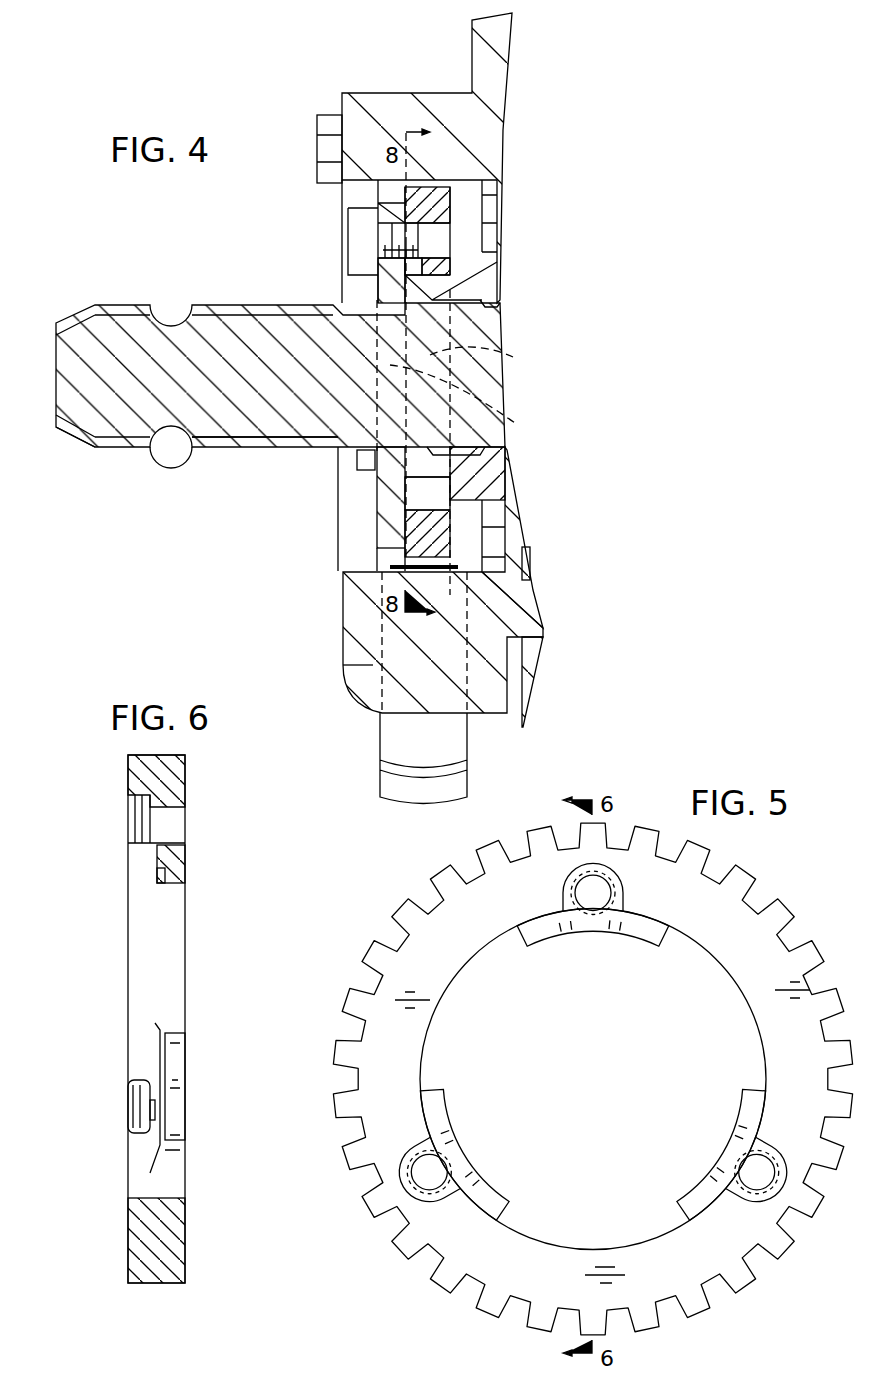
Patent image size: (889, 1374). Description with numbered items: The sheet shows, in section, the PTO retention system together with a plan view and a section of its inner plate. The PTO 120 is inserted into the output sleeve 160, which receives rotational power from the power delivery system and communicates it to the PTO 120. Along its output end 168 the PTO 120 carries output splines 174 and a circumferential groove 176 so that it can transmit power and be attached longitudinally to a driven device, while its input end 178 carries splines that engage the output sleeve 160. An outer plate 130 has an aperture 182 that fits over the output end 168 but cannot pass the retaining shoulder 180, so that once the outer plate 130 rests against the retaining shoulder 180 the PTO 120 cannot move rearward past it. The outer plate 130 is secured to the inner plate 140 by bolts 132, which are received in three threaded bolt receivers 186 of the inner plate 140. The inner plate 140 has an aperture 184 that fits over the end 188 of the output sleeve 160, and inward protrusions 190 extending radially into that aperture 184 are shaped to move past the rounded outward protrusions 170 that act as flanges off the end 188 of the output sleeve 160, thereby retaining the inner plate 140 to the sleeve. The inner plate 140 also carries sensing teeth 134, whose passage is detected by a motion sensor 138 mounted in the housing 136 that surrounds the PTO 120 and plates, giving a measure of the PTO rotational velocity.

In FIG. 4, the PTO 120 is at (66, 360).
In FIG. 4, the outer plate 130 is at (378, 520).
In FIG. 4, the bolts 132 is at (350, 216).
In FIG. 5, the sensing teeth 134 is at (342, 1085).
In FIG. 4, the housing 136 is at (368, 100).
In FIG. 4, the motion sensor 138 is at (388, 740).
In FIG. 4, the inner plate 140 is at (433, 195).
In FIG. 6, the inner plate 140 is at (135, 772).
In FIG. 5, the inner plate 140 is at (450, 928).
In FIG. 4, the output sleeve 160 is at (490, 455).
In FIG. 4, the output end 168 is at (272, 428).
In FIG. 4, the protrusions 170 is at (395, 262).
In FIG. 4, the output splines 174 is at (122, 452).
In FIG. 4, the circumferential groove 176 is at (175, 442).
In FIG. 4, the input end 178 is at (497, 305).
In FIG. 4, the retaining shoulder 180 is at (488, 476).
In FIG. 4, the aperture 182 is at (510, 425).
In FIG. 4, the aperture 184 is at (513, 357).
In FIG. 6, the aperture 184 is at (135, 950).
In FIG. 5, the aperture 184 is at (735, 975).
In FIG. 6, the bolt receivers 186 is at (130, 826).
In FIG. 5, the bolt receivers 186 is at (598, 890).
In FIG. 4, the end 188 is at (390, 282).
In FIG. 4, the inward protrusions 190 is at (445, 265).
In FIG. 6, the inward protrusions 190 is at (180, 860).
In FIG. 5, the inward protrusions 190 is at (598, 934).